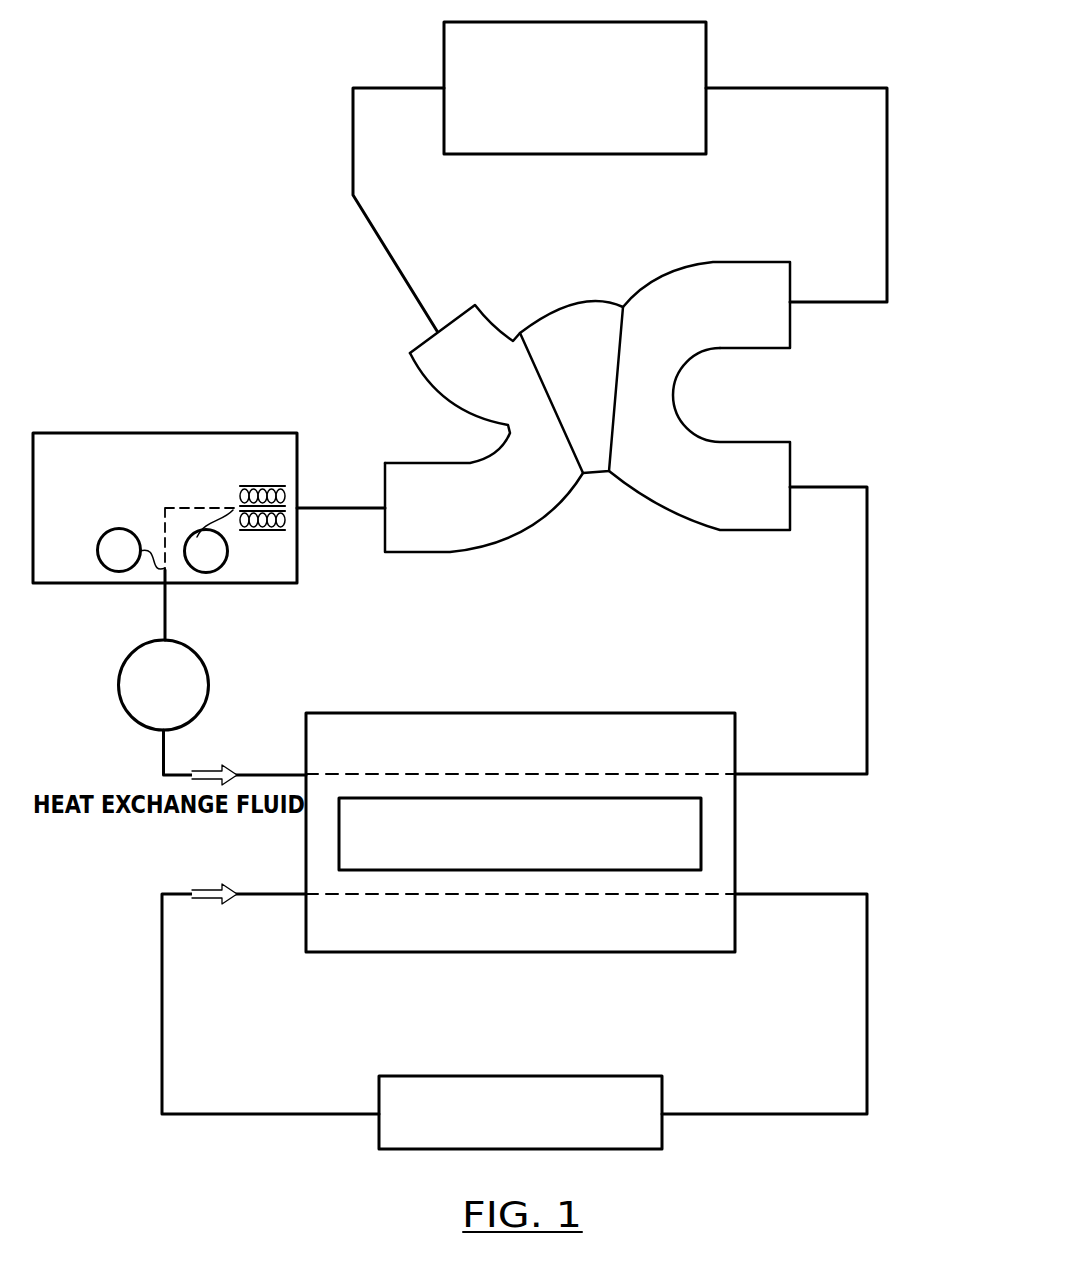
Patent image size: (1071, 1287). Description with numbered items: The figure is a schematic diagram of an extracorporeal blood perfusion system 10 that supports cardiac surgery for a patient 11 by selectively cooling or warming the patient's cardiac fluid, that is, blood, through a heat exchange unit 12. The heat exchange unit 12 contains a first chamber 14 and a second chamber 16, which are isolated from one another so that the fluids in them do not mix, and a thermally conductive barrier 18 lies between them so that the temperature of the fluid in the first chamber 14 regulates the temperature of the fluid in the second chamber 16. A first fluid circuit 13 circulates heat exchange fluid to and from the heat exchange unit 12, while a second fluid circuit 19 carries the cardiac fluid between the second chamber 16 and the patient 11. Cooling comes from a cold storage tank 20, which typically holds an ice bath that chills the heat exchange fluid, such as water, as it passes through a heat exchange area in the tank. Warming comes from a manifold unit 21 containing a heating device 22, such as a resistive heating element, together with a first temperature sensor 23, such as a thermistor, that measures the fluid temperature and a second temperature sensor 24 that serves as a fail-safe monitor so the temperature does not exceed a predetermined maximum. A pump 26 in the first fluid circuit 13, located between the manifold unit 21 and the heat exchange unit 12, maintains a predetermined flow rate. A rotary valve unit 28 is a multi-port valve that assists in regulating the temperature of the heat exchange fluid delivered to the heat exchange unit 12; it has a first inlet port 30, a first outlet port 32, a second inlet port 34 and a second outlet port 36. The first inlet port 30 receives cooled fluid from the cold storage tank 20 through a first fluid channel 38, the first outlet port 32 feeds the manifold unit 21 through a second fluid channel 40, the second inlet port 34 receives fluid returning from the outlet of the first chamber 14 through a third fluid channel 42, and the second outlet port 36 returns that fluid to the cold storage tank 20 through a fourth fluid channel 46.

The extracorporeal blood perfusion system 10 is at (144, 124).
The patient 11 is at (663, 1097).
The heat exchange unit 12 is at (695, 712).
The first fluid circuit 13 is at (910, 518).
The first chamber 14 is at (707, 776).
The second chamber 16 is at (707, 892).
The thermally conductive barrier 18 is at (357, 826).
The second fluid circuit 19 is at (870, 942).
The cold storage tank 20 is at (708, 47).
The manifold unit 21 is at (160, 432).
The heating device 22 is at (267, 483).
The first temperature sensor 23 is at (202, 572).
The second temperature sensor 24 is at (120, 571).
The pump 26 is at (118, 685).
The rotary valve unit 28 is at (576, 255).
The first inlet port 30 is at (428, 335).
The first outlet port 32 is at (387, 525).
The second inlet port 34 is at (792, 462).
The second outlet port 36 is at (788, 277).
The first fluid channel 38 is at (352, 133).
The second fluid channel 40 is at (336, 510).
The third fluid channel 42 is at (870, 673).
The fourth fluid channel 46 is at (882, 200).